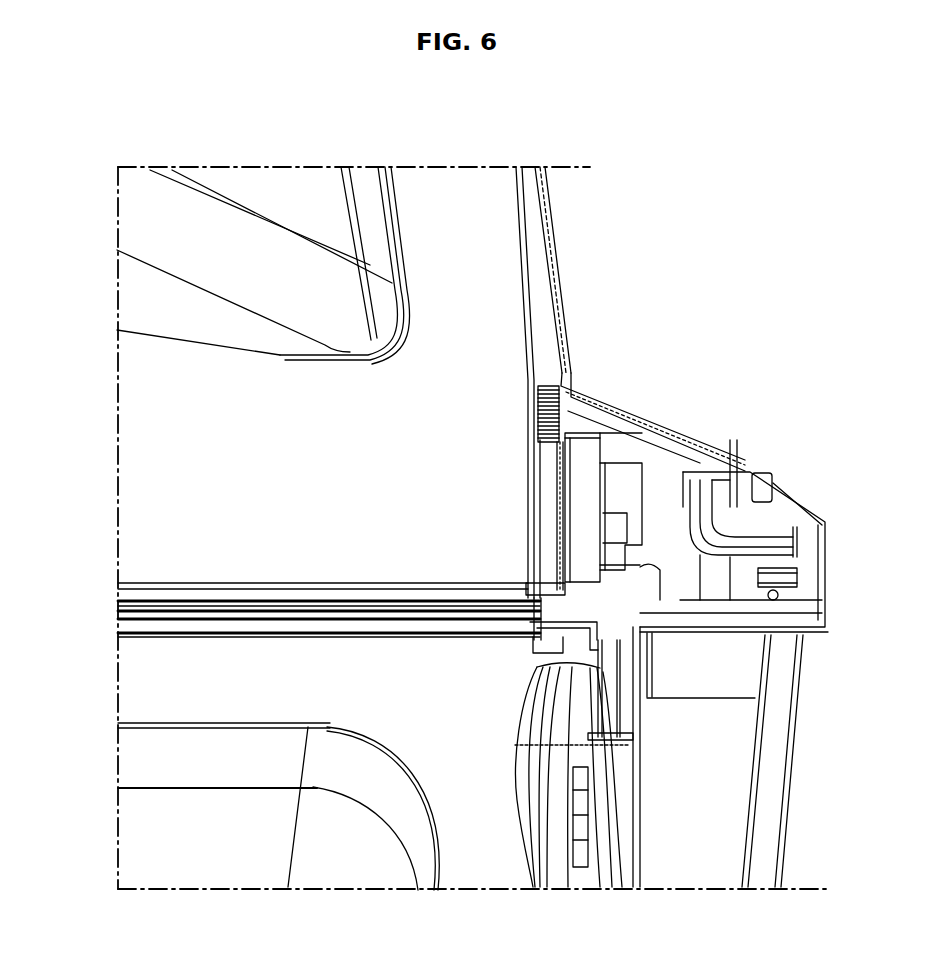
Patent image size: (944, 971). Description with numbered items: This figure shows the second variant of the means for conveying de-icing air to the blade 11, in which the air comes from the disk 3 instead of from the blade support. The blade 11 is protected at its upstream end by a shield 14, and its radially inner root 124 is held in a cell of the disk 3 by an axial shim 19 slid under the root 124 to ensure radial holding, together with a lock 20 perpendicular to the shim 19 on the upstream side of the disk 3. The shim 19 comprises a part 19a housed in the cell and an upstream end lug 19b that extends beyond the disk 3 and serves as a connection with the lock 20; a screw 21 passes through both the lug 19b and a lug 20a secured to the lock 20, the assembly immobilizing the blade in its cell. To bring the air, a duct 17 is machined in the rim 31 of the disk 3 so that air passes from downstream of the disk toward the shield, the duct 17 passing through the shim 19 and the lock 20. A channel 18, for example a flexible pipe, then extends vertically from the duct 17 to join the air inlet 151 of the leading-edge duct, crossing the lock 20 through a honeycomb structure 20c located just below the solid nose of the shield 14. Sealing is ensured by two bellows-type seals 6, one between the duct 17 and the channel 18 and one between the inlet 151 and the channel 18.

The disk 3 is at (488, 866).
The bellows-type seal 6 is at (543, 583).
The blade 11 is at (362, 472).
The shield 14 is at (537, 268).
The duct 17 is at (365, 625).
The channel 18 is at (553, 585).
The axial shim 19 is at (283, 606).
The part of the shim 19a is at (425, 597).
The upstream end lug 19b is at (612, 592).
The lock 20 is at (585, 495).
The lug 20a is at (633, 553).
The honeycomb structure 20c is at (534, 512).
The screw 21 is at (628, 566).
The rim 31 is at (468, 708).
The root 124 is at (245, 583).
The air inlet 151 is at (548, 414).